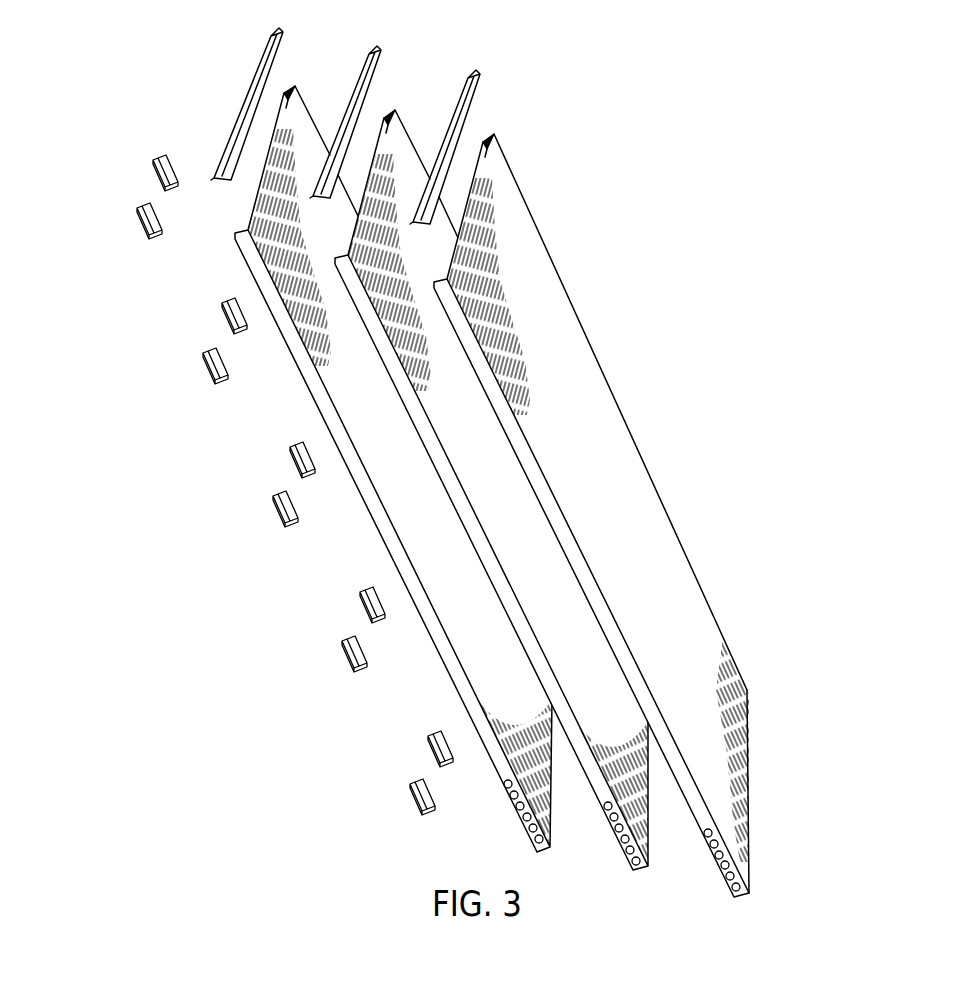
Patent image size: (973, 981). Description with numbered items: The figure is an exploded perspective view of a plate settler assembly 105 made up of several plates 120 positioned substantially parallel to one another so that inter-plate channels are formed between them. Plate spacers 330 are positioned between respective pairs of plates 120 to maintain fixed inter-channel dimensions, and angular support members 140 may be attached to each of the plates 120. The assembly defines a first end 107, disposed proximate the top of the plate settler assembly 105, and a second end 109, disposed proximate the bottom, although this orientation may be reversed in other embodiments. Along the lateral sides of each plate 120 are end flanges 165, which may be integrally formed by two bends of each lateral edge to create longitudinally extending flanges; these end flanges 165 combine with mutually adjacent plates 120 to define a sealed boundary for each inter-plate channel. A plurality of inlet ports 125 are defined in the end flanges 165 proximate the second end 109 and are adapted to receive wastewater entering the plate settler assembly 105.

The plate settler assembly 105 is at (444, 461).
The first end 107 is at (510, 192).
The second end 109 is at (723, 683).
The plate 120 is at (680, 527).
The inlet port 125 is at (710, 833).
The angular support member 140 is at (481, 74).
The end flange 165 is at (552, 508).
The plate spacer 330 is at (143, 228).